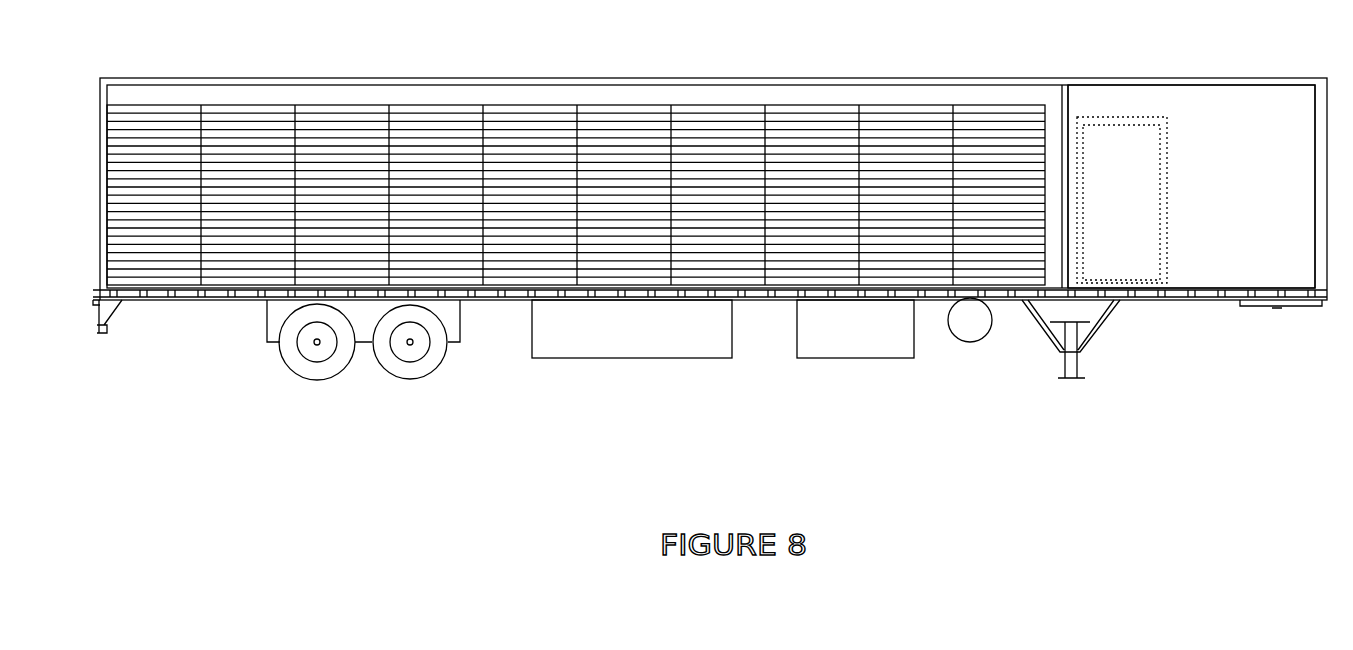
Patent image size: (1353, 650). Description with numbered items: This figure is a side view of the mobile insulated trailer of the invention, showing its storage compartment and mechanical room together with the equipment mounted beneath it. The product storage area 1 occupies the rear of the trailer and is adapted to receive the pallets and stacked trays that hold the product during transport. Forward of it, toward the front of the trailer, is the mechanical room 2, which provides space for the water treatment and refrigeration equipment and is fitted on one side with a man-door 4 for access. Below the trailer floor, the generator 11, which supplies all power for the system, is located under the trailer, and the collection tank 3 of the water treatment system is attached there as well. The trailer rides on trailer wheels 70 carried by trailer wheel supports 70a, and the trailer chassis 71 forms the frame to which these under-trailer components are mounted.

The product storage area 1 is at (612, 130).
The mechanical room 2 is at (1197, 177).
The collection tank 3 is at (613, 325).
The man-door 4 is at (1103, 177).
The generator 11 is at (850, 327).
The trailer wheels 70 is at (398, 378).
The trailer wheel supports 70a is at (280, 319).
The trailer chassis 71 is at (975, 333).